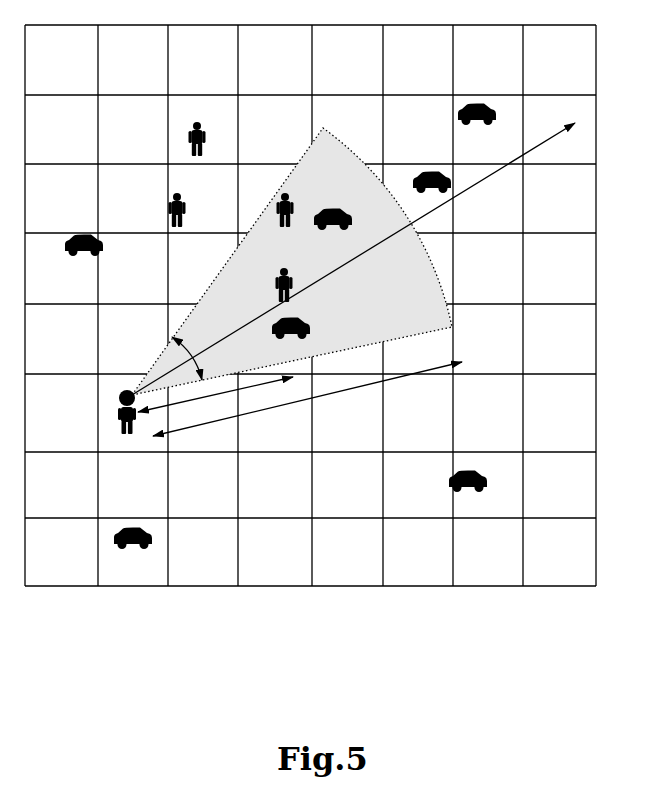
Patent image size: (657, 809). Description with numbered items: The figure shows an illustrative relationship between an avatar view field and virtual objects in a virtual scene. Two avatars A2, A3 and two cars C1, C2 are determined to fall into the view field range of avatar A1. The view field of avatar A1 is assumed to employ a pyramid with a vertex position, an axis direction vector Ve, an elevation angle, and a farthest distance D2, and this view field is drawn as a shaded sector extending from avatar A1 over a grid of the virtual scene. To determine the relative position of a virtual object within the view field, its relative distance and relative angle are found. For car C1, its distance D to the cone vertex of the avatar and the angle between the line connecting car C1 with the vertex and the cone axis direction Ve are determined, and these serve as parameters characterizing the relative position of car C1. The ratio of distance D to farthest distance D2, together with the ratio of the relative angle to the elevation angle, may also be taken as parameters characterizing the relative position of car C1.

The avatar A1 is at (110, 412).
The avatar A2 is at (299, 203).
The avatar A3 is at (267, 285).
The car C1 is at (284, 340).
The car C2 is at (343, 210).
The distance D is at (215, 394).
The farthest distance D2 is at (307, 399).
The axis direction vector Ve is at (351, 247).